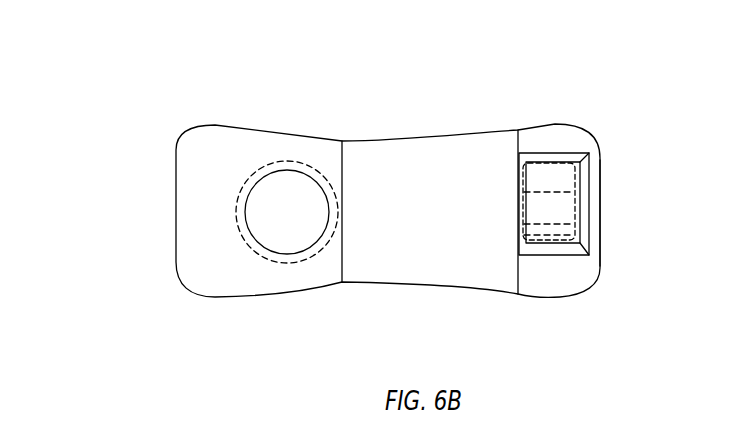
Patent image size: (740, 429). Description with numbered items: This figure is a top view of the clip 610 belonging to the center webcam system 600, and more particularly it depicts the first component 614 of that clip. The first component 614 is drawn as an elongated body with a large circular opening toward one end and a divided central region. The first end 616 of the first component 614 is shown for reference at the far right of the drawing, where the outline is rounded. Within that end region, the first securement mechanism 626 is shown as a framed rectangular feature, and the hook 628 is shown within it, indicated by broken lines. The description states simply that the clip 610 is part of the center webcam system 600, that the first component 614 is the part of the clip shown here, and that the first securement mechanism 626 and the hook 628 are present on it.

The center webcam system 600 is at (109, 104).
The clip 610 is at (400, 140).
The first component 614 is at (457, 256).
The first end 616 is at (600, 179).
The first securement mechanism 626 is at (562, 152).
The hook 628 is at (580, 208).